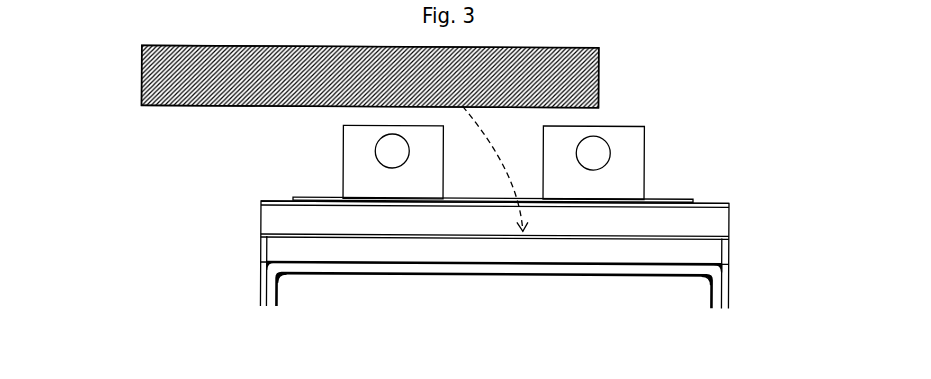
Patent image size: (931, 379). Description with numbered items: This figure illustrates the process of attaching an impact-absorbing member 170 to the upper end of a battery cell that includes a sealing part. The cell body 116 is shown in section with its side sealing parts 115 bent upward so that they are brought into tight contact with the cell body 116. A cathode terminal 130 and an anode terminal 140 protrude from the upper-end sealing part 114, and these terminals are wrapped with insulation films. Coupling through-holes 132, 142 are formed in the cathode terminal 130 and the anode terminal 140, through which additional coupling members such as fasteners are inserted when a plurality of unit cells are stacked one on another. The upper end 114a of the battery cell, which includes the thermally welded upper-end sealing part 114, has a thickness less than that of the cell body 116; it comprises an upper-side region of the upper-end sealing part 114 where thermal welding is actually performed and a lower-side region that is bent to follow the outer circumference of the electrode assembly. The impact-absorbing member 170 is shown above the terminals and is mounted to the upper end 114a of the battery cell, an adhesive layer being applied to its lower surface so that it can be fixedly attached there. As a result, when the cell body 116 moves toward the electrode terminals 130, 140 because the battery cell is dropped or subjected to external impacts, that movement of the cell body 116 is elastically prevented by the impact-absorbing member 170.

The upper-end sealing part 114 is at (280, 217).
The upper end of the battery cell 114a is at (750, 202).
The side sealing part 115 is at (730, 298).
The cell body 116 is at (325, 293).
The cathode terminal 130 is at (353, 166).
The coupling through-hole 132 is at (383, 138).
The anode terminal 140 is at (632, 171).
The coupling through-hole 142 is at (598, 140).
The impact-absorbing member 170 is at (141, 88).